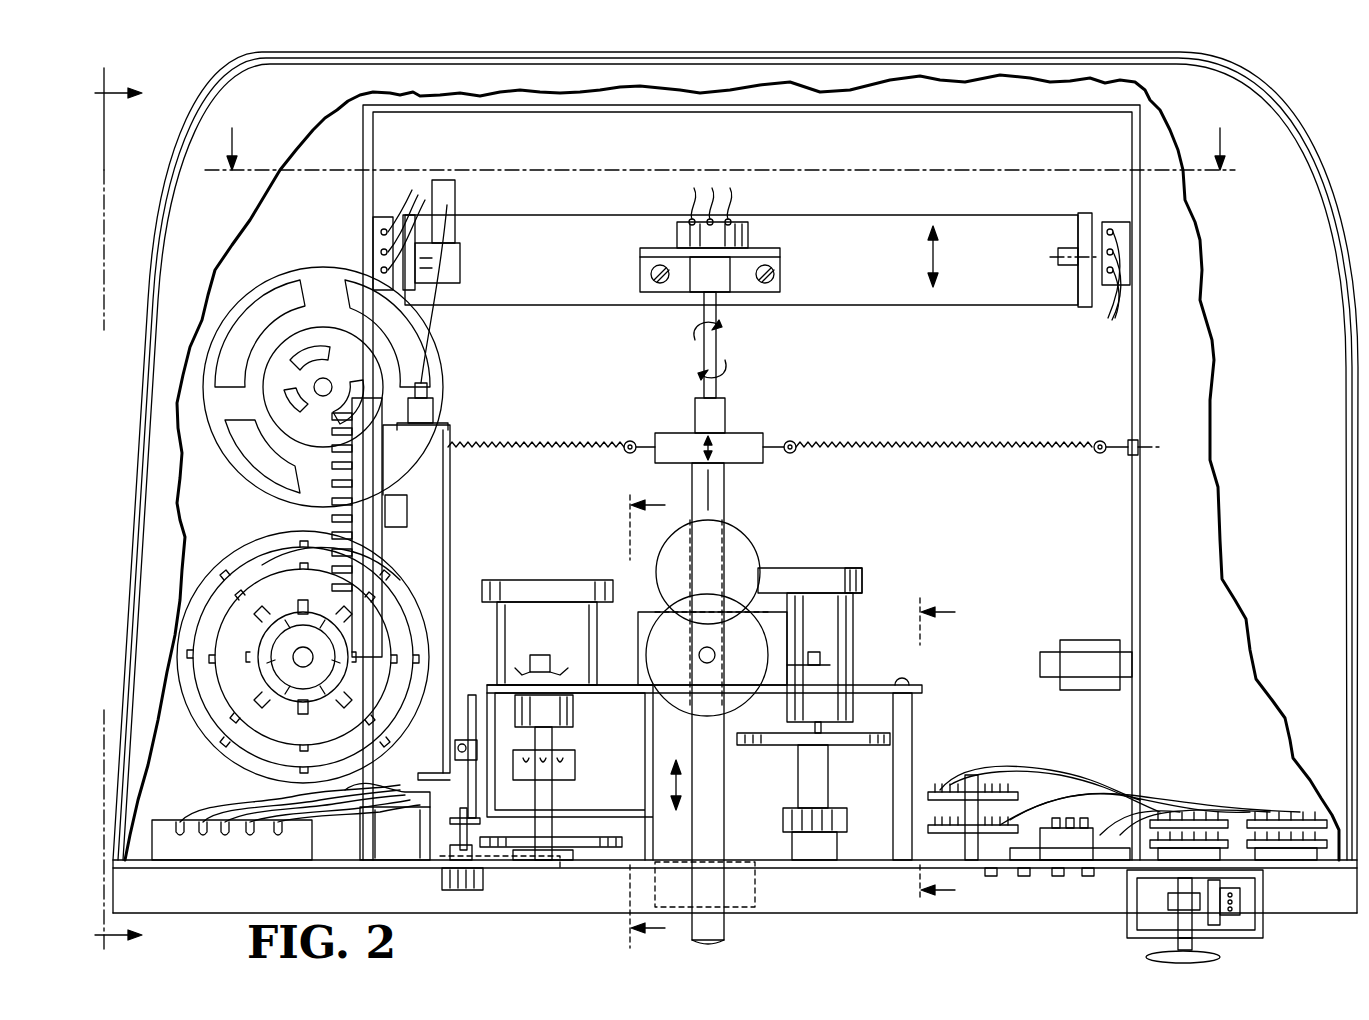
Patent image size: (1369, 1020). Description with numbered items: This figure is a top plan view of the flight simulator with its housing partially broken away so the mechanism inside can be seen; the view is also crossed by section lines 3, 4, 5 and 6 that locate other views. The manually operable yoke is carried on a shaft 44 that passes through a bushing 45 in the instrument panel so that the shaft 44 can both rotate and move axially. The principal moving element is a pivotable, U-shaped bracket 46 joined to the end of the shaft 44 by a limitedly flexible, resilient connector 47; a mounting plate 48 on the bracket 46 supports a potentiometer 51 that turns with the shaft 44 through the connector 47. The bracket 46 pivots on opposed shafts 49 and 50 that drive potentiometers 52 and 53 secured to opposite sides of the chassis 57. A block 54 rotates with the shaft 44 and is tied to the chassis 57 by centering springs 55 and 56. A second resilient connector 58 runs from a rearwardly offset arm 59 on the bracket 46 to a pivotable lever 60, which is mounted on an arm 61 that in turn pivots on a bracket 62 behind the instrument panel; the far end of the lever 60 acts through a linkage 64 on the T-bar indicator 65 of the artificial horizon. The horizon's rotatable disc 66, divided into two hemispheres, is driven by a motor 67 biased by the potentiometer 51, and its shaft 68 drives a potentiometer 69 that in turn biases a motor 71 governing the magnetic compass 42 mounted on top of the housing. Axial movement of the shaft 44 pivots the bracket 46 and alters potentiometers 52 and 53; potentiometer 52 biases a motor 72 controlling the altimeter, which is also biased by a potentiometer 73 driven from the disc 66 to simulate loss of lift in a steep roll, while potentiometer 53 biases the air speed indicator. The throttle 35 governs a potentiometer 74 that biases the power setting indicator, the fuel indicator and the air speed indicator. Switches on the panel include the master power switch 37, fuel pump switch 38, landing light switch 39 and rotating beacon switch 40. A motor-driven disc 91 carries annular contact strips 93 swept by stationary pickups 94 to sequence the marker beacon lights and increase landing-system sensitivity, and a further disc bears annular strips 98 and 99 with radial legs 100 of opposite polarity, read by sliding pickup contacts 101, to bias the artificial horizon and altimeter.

The section line 3- 3 is at (720, 136).
The section line 4- 4 is at (945, 750).
The section line 5- 5 is at (126, 509).
The section line 6- 6 is at (655, 721).
The throttle 35 is at (1147, 957).
The master electrical power on-off switch 37 is at (990, 876).
The fuel pump switch 38 is at (1024, 876).
The landing light switch 39 is at (1058, 876).
The rotating beacon switch 40 is at (1088, 876).
The magnetic compass 42 is at (757, 652).
The shaft 44 is at (727, 418).
The bushing 45 is at (755, 905).
The U-shaped bracket 46 is at (868, 305).
The limitedly flexible resilient connector 47 is at (718, 325).
The mounting plate 48 is at (782, 262).
The shaft 49 is at (462, 262).
The shaft 50 is at (1058, 257).
The potentiometer 51 is at (745, 235).
The potentiometer 52 is at (372, 245).
The potentiometer 53 is at (1132, 245).
The block 54 is at (750, 458).
The centering spring 55 is at (565, 444).
The centering spring 56 is at (932, 444).
The chassis 57 is at (1132, 528).
The second limitedly flexible resilient connector 58 is at (428, 355).
The rearwardly offset arm 59 is at (457, 205).
The pivotable lever 60 is at (450, 508).
The arm 61 is at (470, 700).
The bracket 62 is at (455, 748).
The linkage 64 is at (500, 870).
The T-bar indicator 65 is at (565, 858).
The rotatable disc 66 is at (590, 835).
The motor 67 is at (555, 580).
The shaft 68 is at (552, 745).
The potentiometer 69 is at (575, 712).
The motor 71 is at (745, 550).
The altimeter motor 72 is at (838, 572).
The potentiometer 73 is at (577, 765).
The potentiometer 74 is at (1243, 900).
The disc 91 is at (258, 282).
The annular contact strips 93 is at (268, 350).
The stationary contact pickups 94 is at (302, 452).
The annular contact strip 98 is at (200, 630).
The annular contact strip 99 is at (270, 690).
The radial legs 100 is at (262, 565).
The pickup contacts 101 is at (340, 545).